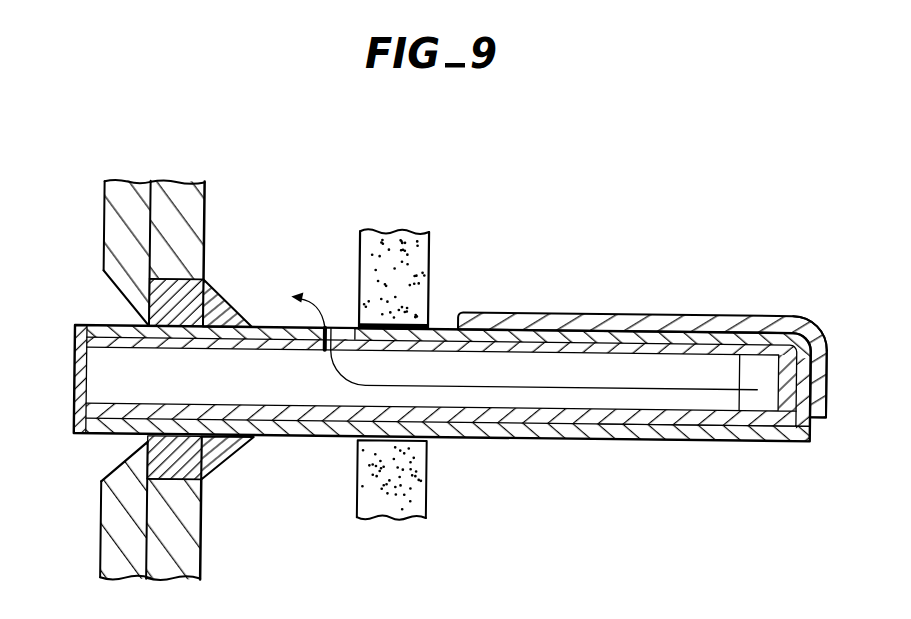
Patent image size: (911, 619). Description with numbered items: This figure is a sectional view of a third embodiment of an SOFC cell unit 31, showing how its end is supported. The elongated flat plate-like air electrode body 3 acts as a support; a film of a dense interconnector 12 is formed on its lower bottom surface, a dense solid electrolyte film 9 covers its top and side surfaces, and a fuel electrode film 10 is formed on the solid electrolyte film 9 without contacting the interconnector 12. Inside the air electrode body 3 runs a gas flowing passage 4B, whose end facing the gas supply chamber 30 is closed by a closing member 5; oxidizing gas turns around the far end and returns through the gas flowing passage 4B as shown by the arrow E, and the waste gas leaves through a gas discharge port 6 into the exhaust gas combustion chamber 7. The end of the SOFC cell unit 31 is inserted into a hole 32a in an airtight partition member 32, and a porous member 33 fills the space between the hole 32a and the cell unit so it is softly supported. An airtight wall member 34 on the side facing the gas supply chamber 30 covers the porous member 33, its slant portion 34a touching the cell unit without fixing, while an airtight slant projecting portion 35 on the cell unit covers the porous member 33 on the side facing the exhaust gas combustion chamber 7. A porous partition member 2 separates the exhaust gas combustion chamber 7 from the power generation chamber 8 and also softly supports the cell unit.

The porous partition member 2 is at (397, 233).
The air electrode body 3 is at (702, 338).
The gas flowing passage 4B is at (582, 412).
The closing member 5 is at (76, 378).
The gas discharge port 6 is at (337, 324).
The exhaust gas combustion chamber 7 is at (278, 240).
The power generation chamber 8 is at (531, 259).
The solid electrolyte film 9 is at (815, 355).
The fuel electrode film 10 is at (805, 316).
The interconnector 12 is at (724, 429).
The gas supply chamber 30 is at (44, 371).
The SOFC cell unit 31 is at (739, 294).
The airtight partition member 32 is at (175, 189).
The hole 32a is at (175, 277).
The porous member 33 is at (182, 289).
The airtight wall member 34 is at (108, 221).
The slant portion 34a is at (126, 298).
The airtight slant projecting portion 35 is at (217, 305).
The arrow E is at (499, 390).